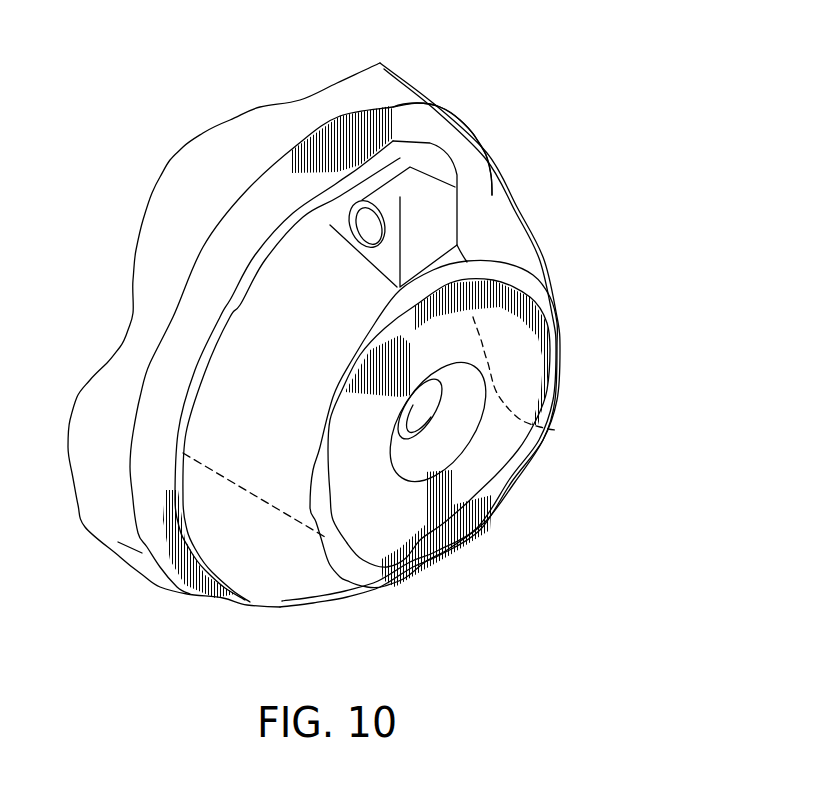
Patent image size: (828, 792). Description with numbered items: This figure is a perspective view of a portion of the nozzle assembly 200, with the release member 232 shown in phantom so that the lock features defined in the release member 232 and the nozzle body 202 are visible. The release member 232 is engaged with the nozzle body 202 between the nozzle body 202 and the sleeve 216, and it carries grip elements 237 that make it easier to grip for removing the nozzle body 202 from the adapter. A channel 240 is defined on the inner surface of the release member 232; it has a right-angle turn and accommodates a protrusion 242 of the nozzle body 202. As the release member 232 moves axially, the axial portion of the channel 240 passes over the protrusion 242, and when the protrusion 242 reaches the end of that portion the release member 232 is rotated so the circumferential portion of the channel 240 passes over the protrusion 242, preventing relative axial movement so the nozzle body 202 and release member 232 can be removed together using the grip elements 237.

The nozzle assembly 200 is at (590, 107).
The nozzle body 202 is at (527, 347).
The sleeve 216 is at (455, 132).
The release member 232 is at (540, 228).
The grip elements 237 is at (410, 190).
The channel 240 is at (557, 430).
The protrusion 242 is at (362, 245).